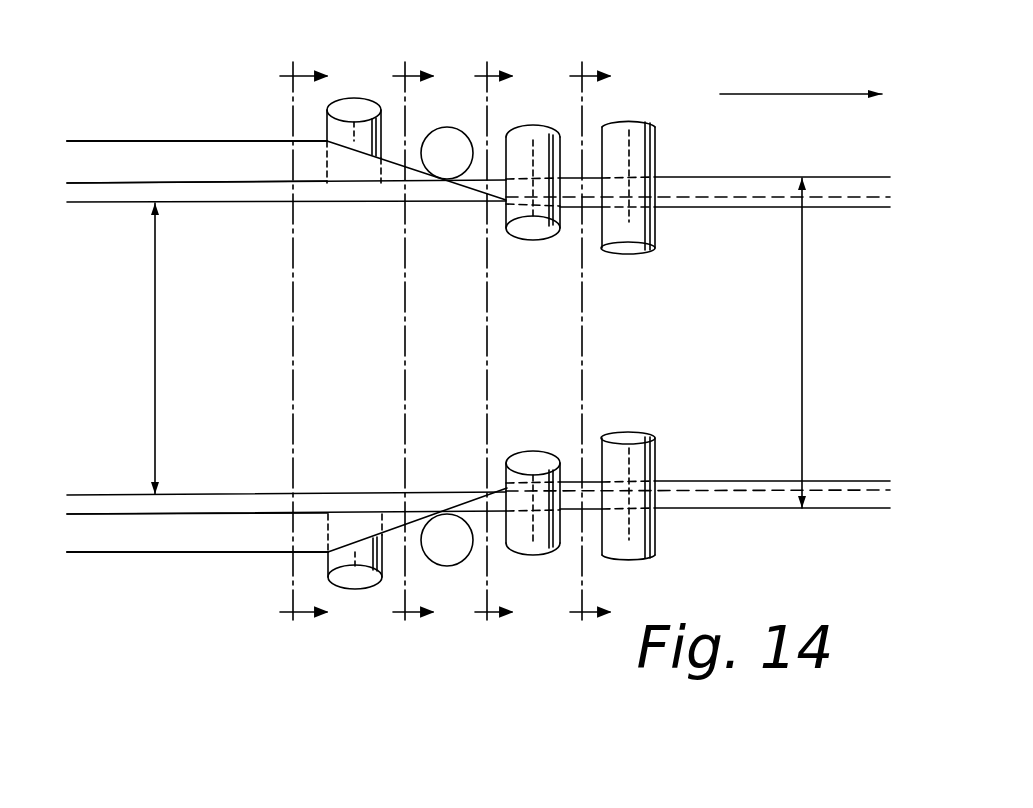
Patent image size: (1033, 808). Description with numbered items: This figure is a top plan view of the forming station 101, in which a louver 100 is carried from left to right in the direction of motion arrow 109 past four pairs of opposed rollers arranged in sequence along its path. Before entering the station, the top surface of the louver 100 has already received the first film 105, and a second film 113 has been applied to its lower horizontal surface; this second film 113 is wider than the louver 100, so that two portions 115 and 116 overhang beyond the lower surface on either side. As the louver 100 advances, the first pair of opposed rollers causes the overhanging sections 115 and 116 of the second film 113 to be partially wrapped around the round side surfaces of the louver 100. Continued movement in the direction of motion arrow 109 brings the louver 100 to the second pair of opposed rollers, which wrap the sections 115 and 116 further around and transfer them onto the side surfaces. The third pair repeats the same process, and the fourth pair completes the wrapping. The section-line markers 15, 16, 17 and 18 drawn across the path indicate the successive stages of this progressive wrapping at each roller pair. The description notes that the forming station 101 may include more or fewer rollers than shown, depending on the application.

The louver 100 is at (802, 357).
The forming station 101 is at (156, 672).
The first film 105 is at (155, 352).
The direction of motion arrow 109 is at (788, 92).
The second film 113 is at (161, 155).
The portion of second film 115 is at (108, 153).
The portion of second film 116 is at (193, 533).
The section line of FIG. 15 is at (285, 343).
The section line of FIG. 16 is at (395, 343).
The section line of FIG. 17 is at (478, 343).
The section line of FIG. 18 is at (574, 343).